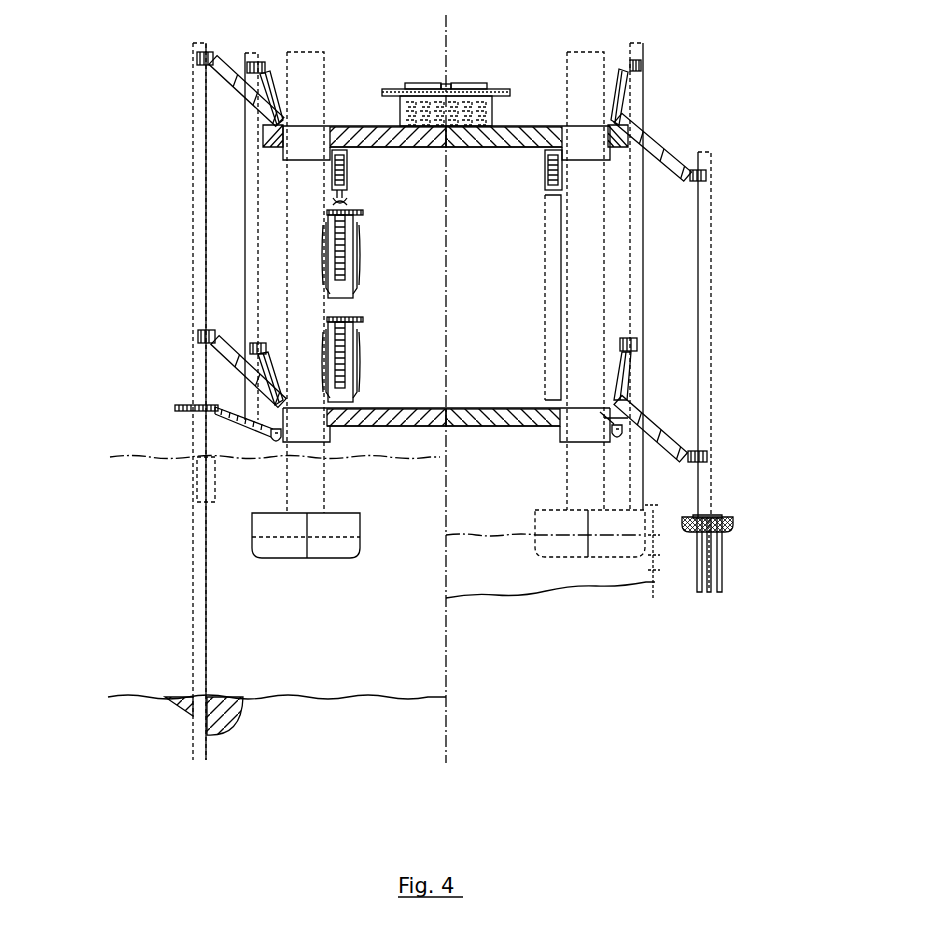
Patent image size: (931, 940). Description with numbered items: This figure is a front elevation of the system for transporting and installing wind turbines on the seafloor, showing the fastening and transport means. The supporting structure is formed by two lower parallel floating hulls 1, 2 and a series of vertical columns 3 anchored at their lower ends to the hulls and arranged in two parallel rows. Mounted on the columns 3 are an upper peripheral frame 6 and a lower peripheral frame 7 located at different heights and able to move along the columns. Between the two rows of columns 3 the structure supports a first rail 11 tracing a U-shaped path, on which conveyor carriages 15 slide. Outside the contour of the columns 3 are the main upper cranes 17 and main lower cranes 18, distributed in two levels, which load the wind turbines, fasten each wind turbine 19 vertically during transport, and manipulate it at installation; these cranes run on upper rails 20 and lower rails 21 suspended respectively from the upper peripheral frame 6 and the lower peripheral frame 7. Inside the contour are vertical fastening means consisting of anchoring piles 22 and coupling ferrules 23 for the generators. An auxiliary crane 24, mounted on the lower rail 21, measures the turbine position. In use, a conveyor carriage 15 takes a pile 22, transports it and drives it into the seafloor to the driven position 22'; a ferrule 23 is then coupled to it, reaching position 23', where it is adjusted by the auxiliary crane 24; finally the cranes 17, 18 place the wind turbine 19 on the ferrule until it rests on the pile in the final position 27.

The floating hull 1 is at (330, 528).
The floating hull 2 is at (557, 527).
The vertical column 3 is at (311, 52).
The upper peripheral frame 6 is at (518, 128).
The lower peripheral frame 7 is at (502, 425).
The first rail 11 is at (487, 152).
The conveyor carriage 15 is at (348, 180).
The main upper crane 17 is at (225, 75).
The main lower crane 18 is at (233, 355).
The wind turbine 19 is at (203, 272).
The upper rail 20 is at (263, 135).
The lower rail 21 is at (237, 427).
The anchoring pile 22 is at (521, 297).
The pile at driven position 22' is at (153, 401).
The coupling ferrule 23 is at (366, 305).
The ferrule at coupled position 23' is at (447, 517).
The auxiliary crane 24 is at (215, 412).
The final position 27 is at (707, 302).